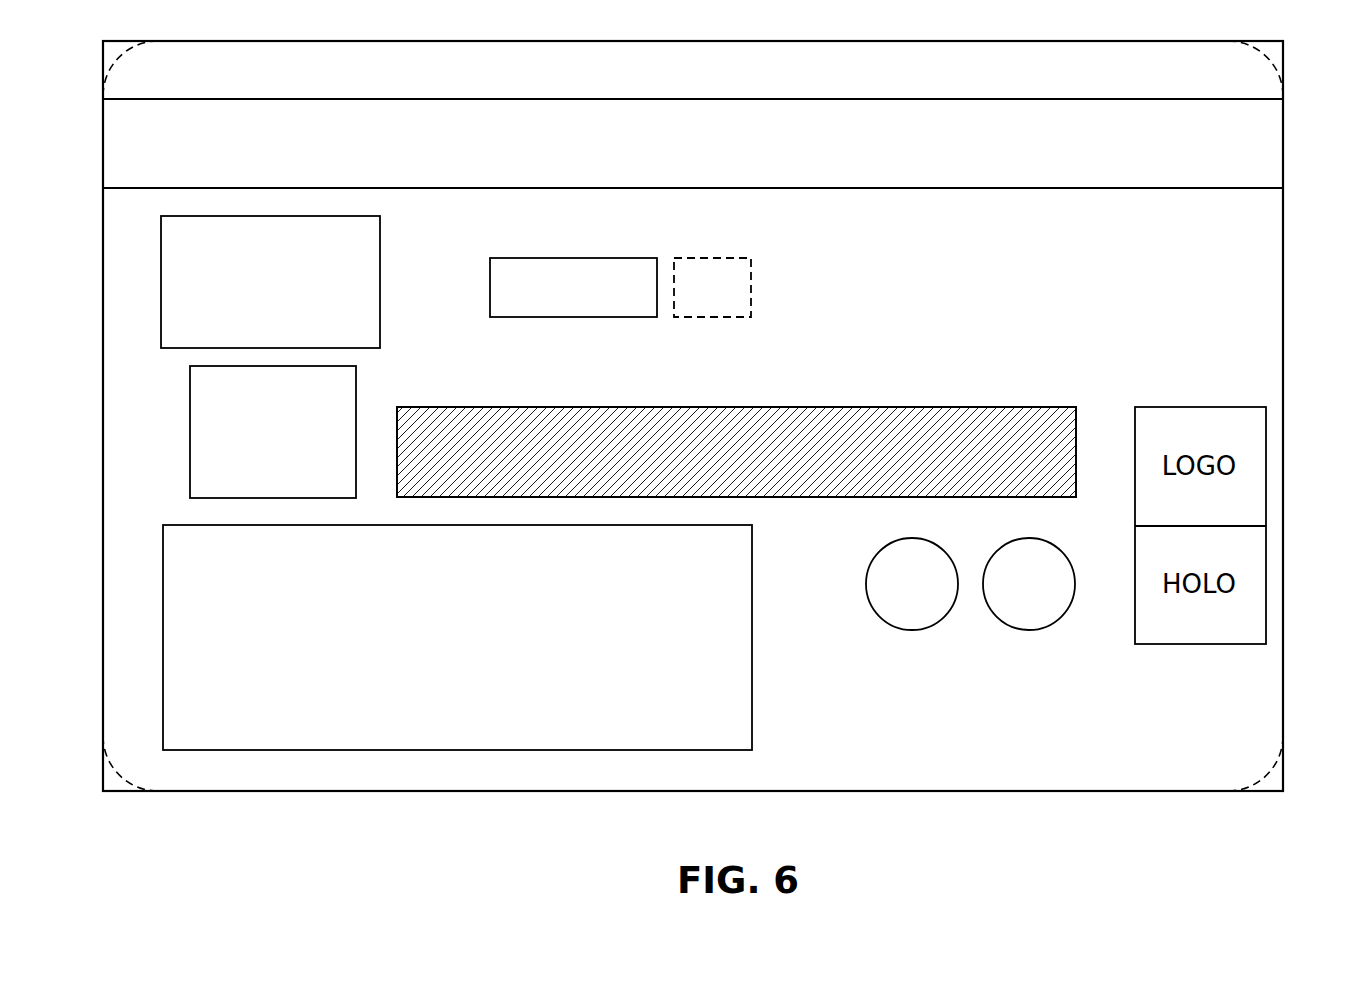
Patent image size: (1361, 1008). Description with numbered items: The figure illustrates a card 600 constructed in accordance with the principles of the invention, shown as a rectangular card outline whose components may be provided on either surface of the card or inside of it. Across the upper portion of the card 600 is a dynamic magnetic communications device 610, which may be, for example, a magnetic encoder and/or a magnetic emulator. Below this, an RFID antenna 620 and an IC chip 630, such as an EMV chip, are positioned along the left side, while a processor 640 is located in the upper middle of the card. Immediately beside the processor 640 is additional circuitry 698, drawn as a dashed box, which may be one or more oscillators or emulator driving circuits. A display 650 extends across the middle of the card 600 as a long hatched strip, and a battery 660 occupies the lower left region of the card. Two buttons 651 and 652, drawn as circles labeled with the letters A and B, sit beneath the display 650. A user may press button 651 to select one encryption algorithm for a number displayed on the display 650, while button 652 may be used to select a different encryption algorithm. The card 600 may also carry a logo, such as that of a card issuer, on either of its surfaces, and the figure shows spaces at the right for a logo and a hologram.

The card 600 is at (1323, 415).
The dynamic magnetic communications device 610 is at (1003, 103).
The RFID antenna 620 is at (273, 352).
The IC chip 630 is at (188, 429).
The processor 640 is at (501, 262).
The display 650 is at (925, 406).
The button 651 is at (866, 584).
The button 652 is at (1026, 540).
The battery 660 is at (668, 747).
The additional circuitry 698 is at (684, 262).